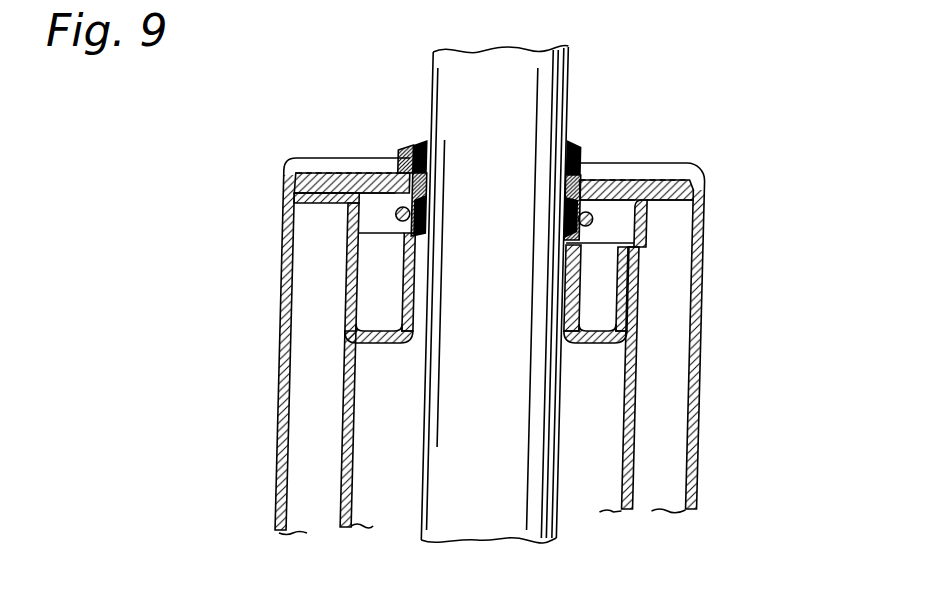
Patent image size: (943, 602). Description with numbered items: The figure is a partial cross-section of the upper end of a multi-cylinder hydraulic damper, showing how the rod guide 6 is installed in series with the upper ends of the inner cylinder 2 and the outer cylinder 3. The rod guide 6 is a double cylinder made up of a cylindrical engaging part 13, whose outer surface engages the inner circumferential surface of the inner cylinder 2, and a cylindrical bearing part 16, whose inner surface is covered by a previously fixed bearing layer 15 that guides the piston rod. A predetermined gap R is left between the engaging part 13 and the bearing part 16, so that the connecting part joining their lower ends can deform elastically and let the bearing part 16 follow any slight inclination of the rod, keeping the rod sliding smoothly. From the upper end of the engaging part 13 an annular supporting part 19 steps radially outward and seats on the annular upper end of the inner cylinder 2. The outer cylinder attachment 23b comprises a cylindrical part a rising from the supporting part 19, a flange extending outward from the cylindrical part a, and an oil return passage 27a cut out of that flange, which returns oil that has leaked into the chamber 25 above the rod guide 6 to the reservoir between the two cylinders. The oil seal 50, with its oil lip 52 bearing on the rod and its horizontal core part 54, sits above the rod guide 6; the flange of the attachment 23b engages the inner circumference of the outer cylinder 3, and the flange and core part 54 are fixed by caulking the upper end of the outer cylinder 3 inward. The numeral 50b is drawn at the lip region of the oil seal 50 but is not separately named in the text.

The inner cylinder 2 is at (645, 477).
The outer cylinder 3 is at (705, 428).
The rod guide 6 is at (604, 358).
The cylindrical engaging part 13 is at (653, 322).
The bearing layer 15 is at (566, 271).
The cylindrical bearing part 16 is at (574, 333).
The annular supporting part 19 is at (653, 252).
The outer cylinder attachment 23b is at (670, 184).
The chamber 25 is at (610, 240).
The oil return passage 27a is at (650, 211).
The oil seal 50 is at (581, 138).
The seal lip 50b is at (614, 168).
The oil lip 52 is at (577, 222).
The core part 54 is at (687, 166).
The gap R is at (392, 276).
The cylindrical part a is at (651, 235).